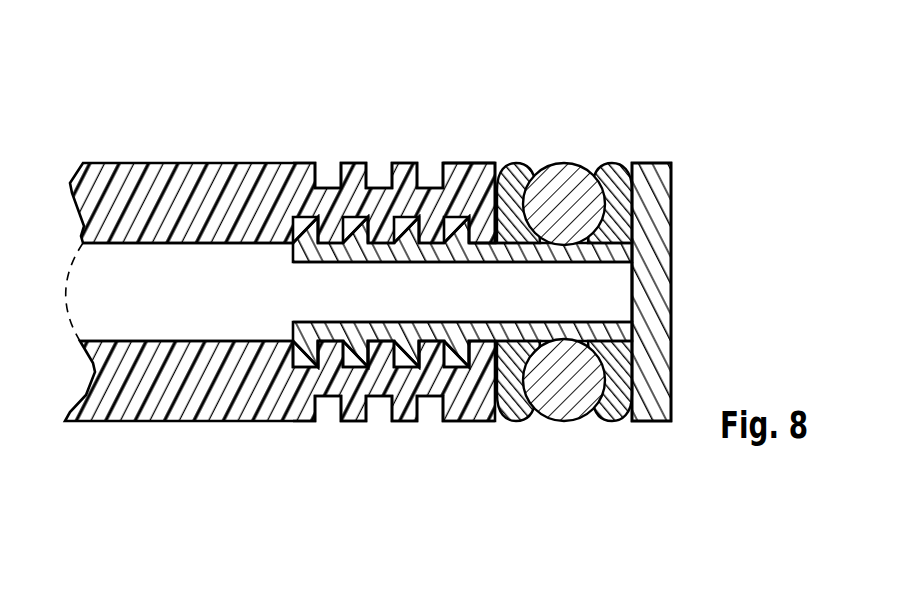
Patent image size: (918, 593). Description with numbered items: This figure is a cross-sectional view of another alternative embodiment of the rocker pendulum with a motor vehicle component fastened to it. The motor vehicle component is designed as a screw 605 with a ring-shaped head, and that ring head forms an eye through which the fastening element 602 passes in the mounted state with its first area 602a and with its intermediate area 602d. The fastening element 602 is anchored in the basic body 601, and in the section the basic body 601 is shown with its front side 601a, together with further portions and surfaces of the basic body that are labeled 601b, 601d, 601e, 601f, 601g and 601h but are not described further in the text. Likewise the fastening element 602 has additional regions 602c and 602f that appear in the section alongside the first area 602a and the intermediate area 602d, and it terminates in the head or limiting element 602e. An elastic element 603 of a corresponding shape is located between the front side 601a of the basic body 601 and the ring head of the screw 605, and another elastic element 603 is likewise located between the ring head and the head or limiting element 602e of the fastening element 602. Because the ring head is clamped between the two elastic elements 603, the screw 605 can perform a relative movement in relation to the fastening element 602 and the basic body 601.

The basic body 601 is at (263, 160).
The front side 601a is at (465, 185).
The wall portion of outer tube 601b is at (130, 190).
The outer ridges / grooves 601d is at (352, 165).
The lower wall portion of outer tube 601e is at (313, 388).
The bore of outer tube 601f is at (240, 307).
The outer groove 601g is at (332, 408).
The inner engagement grooves 601h is at (355, 412).
The fastening element 602 is at (668, 160).
The first area 602a is at (407, 258).
The lower sawtooth projections 602c is at (460, 245).
The intermediate area 602d is at (590, 264).
The head or limiting element 602e is at (662, 287).
The through bore of sleeve 602f is at (605, 305).
The elastic element 603 is at (600, 160).
The screw 605 is at (568, 397).